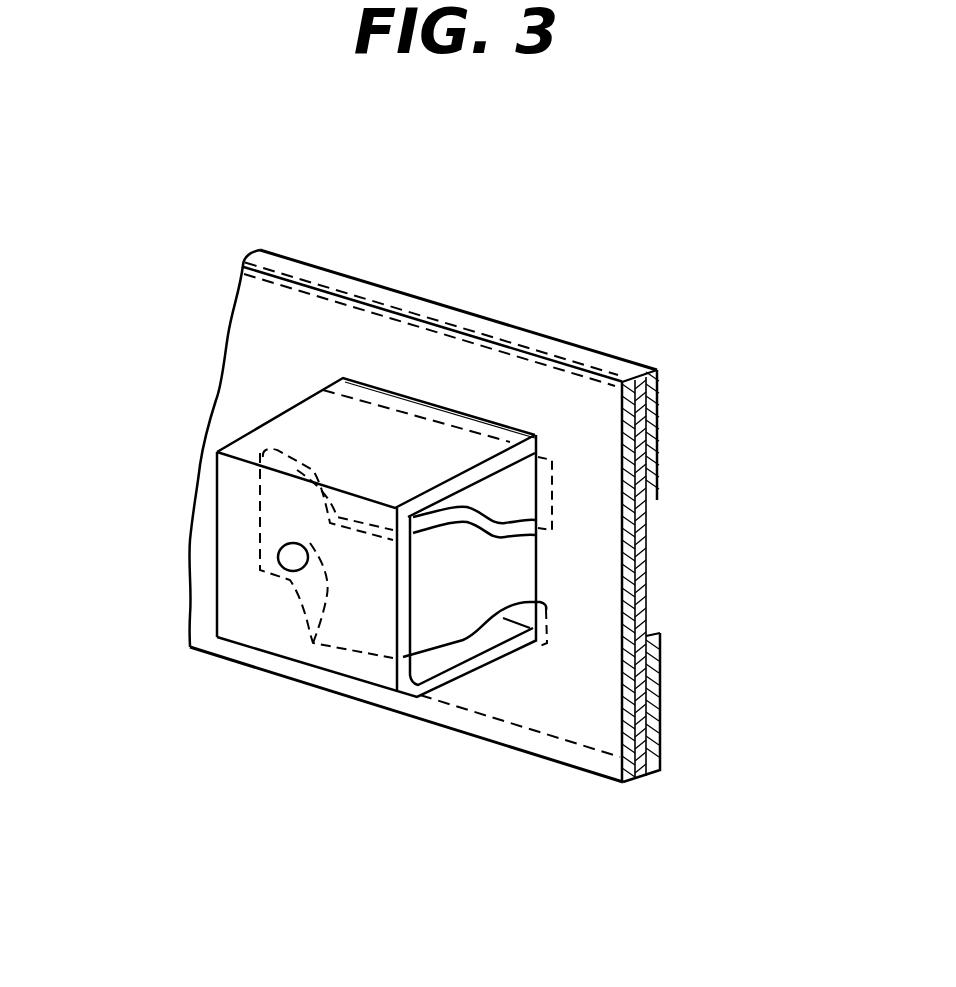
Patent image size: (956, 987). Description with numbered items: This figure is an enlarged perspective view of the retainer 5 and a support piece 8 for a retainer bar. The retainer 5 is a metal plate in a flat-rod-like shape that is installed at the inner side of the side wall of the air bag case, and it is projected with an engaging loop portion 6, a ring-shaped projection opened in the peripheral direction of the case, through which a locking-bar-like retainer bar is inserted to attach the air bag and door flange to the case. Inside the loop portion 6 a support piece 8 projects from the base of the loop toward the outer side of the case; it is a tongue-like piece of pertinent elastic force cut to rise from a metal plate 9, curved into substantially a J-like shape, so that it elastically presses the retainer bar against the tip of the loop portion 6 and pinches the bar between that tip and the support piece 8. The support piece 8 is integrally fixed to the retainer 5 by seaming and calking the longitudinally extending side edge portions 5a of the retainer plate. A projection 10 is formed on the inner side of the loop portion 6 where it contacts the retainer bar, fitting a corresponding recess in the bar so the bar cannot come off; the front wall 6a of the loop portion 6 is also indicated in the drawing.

The retainer 5 is at (665, 523).
The side edge portions 5a is at (660, 432).
The engaging loop portion 6 is at (301, 526).
The front wall of box 6a is at (233, 492).
The support piece for retainer bar 8 is at (438, 612).
The plate 9 is at (643, 605).
The projection 10 is at (281, 571).